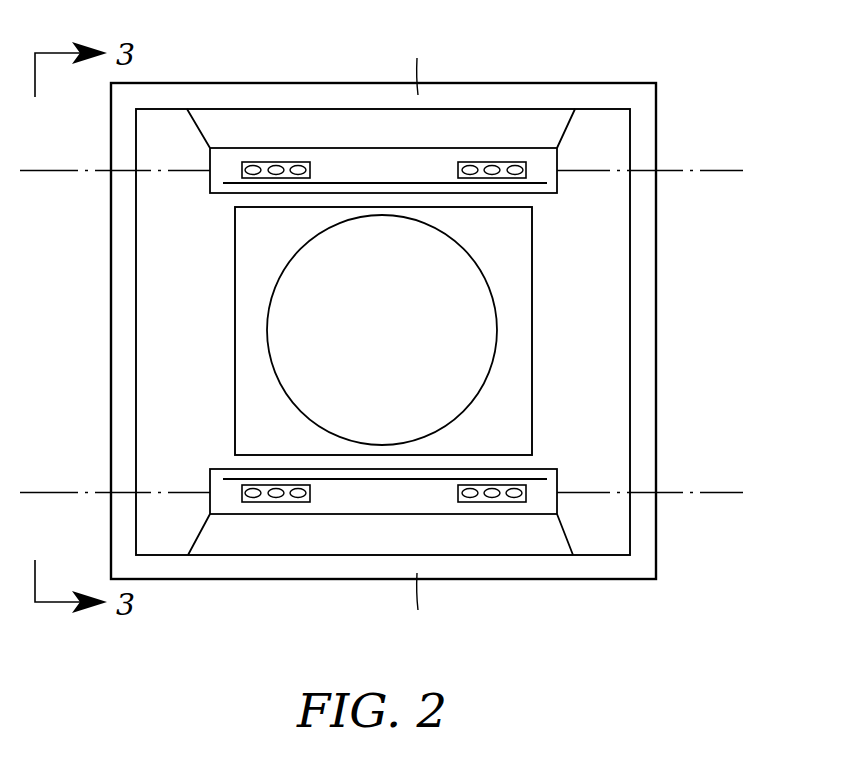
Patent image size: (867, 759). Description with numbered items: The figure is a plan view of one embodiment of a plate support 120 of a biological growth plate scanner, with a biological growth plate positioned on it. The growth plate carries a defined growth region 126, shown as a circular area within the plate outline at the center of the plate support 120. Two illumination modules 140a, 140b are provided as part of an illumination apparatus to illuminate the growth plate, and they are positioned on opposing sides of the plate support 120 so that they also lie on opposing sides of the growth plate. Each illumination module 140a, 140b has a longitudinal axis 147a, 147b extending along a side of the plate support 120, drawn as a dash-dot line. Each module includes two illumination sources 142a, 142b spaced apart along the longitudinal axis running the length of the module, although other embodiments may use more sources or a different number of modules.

The plate support 120 is at (612, 267).
The defined growth region 126 is at (403, 341).
The illumination module 140a is at (350, 516).
The illumination module 140b is at (349, 150).
The illumination sources 142a is at (271, 518).
The illumination sources 142b is at (271, 145).
The longitudinal axis 147a is at (708, 492).
The longitudinal axis 147b is at (703, 170).